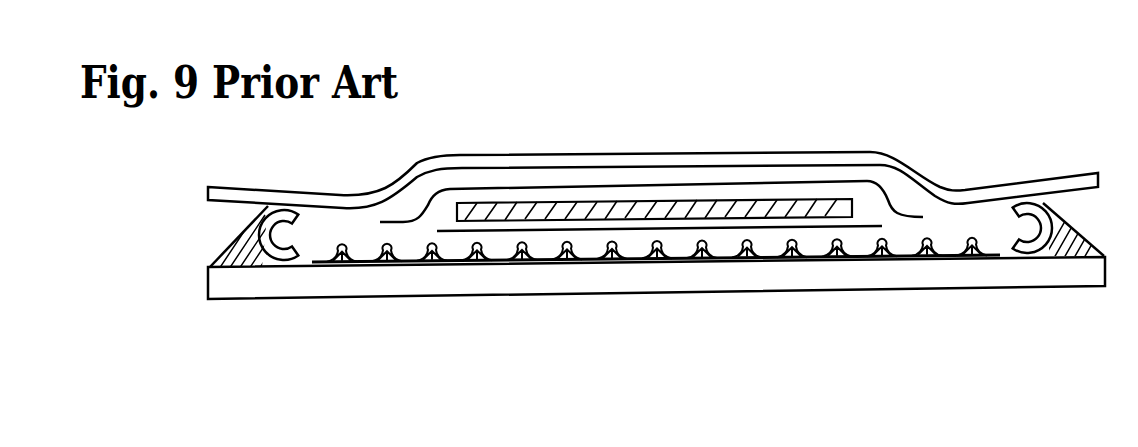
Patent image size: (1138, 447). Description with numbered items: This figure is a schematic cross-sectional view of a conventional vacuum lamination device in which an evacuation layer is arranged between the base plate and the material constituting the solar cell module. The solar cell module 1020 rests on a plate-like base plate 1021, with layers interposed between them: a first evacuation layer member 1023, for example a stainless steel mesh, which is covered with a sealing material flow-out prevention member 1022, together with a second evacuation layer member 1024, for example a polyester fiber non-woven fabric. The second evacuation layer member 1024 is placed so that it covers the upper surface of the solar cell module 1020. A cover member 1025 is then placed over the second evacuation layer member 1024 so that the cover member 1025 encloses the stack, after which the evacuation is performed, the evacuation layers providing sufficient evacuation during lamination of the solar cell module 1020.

The solar cell module 1020 is at (515, 203).
The base plate 1021 is at (561, 283).
The sealing material flow-out prevention member 1022 is at (690, 263).
The first evacuation layer member 1023 is at (828, 259).
The second evacuation layer member 1024 is at (866, 224).
The cover member 1025 is at (700, 154).